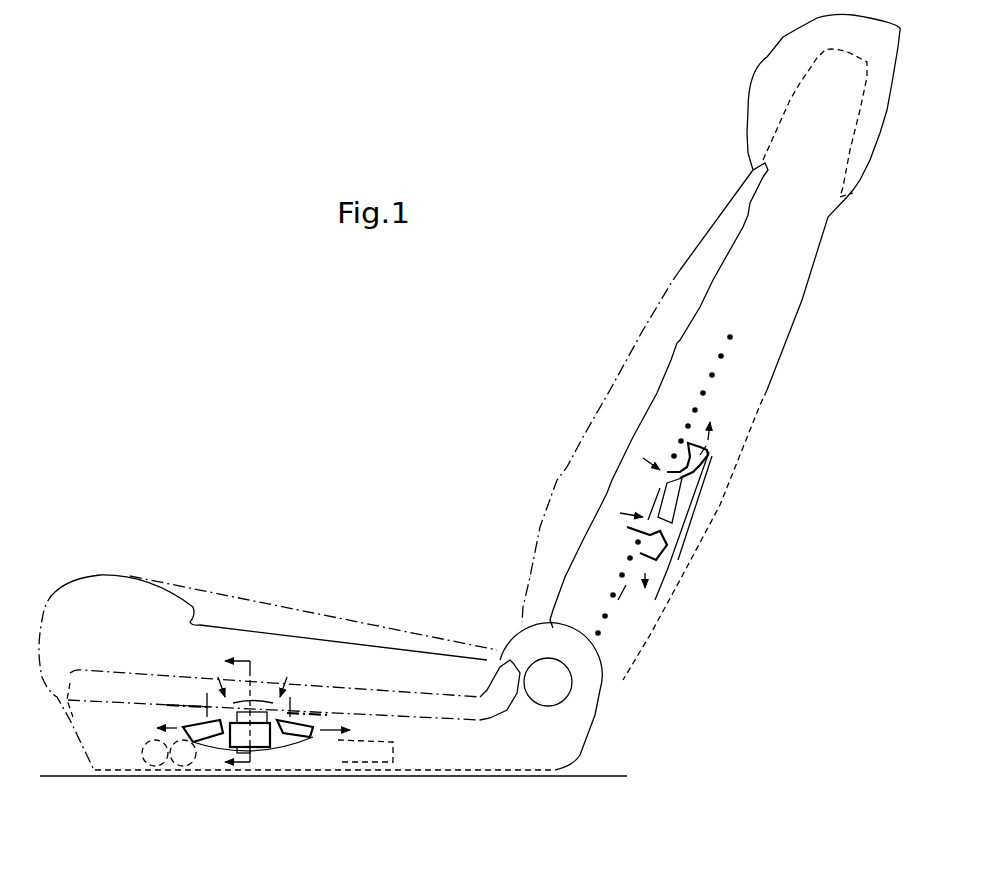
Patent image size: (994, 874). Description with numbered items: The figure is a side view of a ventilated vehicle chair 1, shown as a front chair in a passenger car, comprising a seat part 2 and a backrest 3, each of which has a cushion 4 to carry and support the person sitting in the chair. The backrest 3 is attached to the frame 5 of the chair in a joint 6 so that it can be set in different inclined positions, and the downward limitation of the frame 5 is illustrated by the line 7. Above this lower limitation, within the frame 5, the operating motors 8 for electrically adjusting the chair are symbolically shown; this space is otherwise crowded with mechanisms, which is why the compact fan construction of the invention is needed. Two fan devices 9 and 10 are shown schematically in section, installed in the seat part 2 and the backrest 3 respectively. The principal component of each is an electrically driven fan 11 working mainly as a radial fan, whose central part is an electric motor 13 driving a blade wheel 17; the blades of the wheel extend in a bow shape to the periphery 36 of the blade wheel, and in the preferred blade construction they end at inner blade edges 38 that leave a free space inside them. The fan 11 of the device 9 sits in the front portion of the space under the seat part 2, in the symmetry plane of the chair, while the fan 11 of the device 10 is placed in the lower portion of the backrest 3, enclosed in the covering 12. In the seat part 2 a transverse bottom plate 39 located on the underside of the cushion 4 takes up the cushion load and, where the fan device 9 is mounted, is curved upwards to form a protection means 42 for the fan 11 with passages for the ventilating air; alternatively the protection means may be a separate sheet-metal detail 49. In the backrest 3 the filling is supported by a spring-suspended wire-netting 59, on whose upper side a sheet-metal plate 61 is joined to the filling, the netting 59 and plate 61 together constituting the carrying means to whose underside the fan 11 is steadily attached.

The ventilated vehicle chair 1 is at (385, 443).
The seat part 2 is at (233, 583).
The backrest 3 is at (640, 308).
The cushion 4 is at (622, 372).
The frame 5 is at (557, 753).
The joint 6 is at (555, 690).
The line 7 is at (478, 765).
The operating motors 8 is at (183, 762).
The fan device 9 is at (240, 780).
The fan device 10 is at (700, 515).
The fan 11 is at (207, 747).
The covering 12 is at (680, 583).
The electric motor 13 is at (260, 747).
The blade wheel 17 is at (290, 733).
The periphery 36 is at (708, 443).
The inner blade edges 38 is at (327, 742).
The bottom plate 39 is at (307, 710).
The protection means 42 is at (263, 693).
The protection means 49 is at (650, 497).
The wire-netting 59 is at (610, 618).
The sheet-metal plate 61 is at (620, 587).